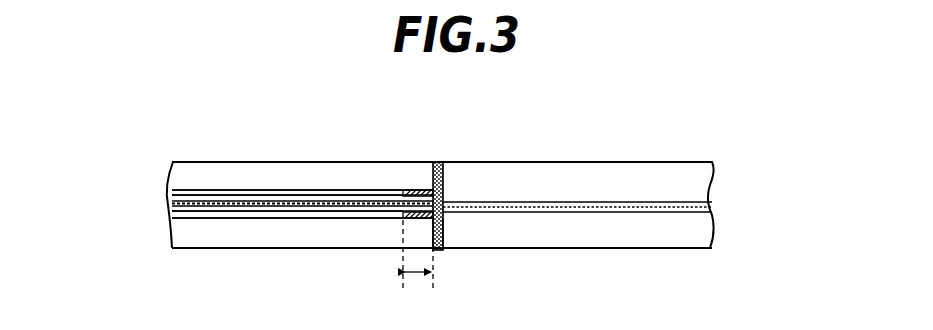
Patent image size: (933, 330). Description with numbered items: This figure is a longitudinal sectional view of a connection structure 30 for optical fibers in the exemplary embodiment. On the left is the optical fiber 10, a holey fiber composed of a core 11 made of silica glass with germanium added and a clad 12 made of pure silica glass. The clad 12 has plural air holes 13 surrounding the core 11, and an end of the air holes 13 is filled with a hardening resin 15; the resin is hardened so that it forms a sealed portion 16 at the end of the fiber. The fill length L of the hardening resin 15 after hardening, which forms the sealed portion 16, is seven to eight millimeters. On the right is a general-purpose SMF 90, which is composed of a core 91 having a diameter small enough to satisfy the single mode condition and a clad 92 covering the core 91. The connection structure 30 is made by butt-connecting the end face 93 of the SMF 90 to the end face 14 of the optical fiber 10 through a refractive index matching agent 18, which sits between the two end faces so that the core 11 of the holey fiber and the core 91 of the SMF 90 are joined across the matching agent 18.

The optical fiber 10 is at (216, 152).
The core 11 is at (176, 205).
The clad 12 is at (239, 244).
The air holes 13 is at (332, 193).
The end face 14 is at (433, 223).
The hardening resin 15 is at (427, 190).
The sealed portion 16 is at (405, 220).
The refractive index matching agent 18 is at (443, 235).
The connection structure 30 is at (606, 96).
The SMF 90 is at (648, 149).
The core 91 is at (713, 208).
The clad 92 is at (557, 232).
The end face 93 is at (443, 188).